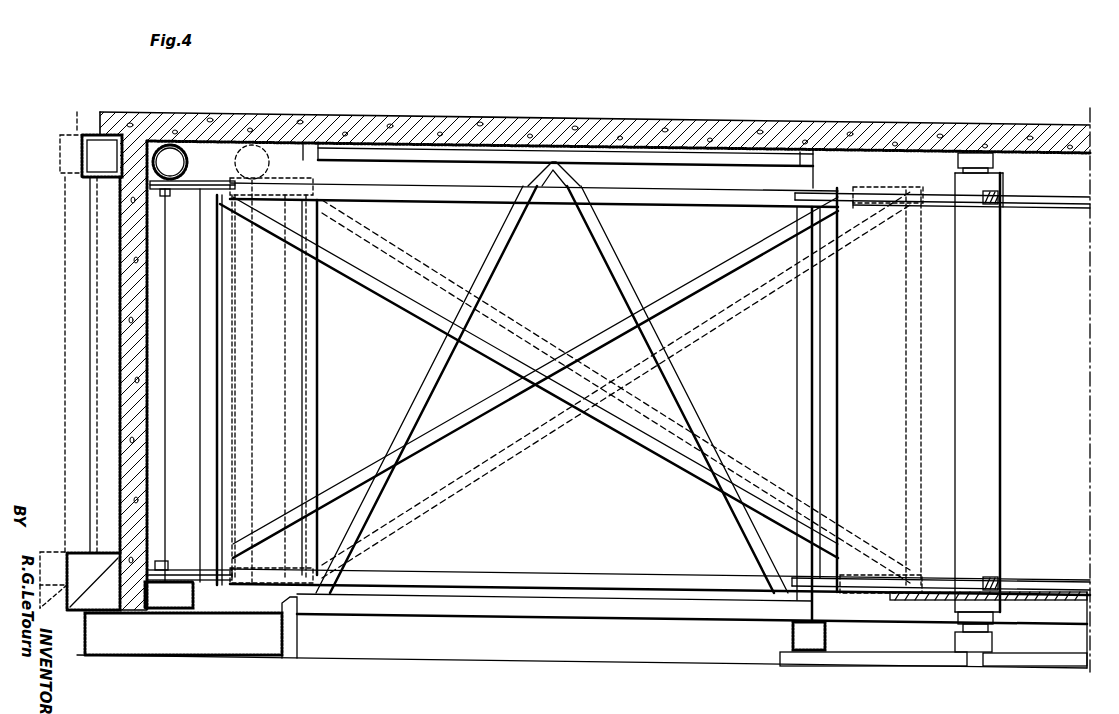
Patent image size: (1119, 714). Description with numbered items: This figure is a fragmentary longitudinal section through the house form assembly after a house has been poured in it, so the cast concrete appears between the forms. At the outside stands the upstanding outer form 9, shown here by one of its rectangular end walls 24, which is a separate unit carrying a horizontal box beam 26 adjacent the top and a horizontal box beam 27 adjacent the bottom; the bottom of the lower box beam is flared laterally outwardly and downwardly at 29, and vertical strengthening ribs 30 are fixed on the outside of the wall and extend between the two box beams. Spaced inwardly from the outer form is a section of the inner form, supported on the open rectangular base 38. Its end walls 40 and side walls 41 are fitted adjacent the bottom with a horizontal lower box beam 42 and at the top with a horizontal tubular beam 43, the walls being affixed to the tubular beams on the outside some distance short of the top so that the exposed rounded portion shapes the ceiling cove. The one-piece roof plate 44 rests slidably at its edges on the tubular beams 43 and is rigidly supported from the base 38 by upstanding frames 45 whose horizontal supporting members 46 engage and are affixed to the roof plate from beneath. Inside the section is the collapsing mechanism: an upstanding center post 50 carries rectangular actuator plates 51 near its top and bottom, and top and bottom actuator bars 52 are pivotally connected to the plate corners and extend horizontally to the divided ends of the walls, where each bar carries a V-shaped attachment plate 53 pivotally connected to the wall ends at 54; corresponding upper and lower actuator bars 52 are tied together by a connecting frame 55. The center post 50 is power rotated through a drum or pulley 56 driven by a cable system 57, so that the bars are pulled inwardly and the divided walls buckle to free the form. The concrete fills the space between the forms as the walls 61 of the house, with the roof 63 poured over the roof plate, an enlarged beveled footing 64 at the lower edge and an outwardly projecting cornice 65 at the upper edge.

The outer form 9 is at (86, 377).
The end walls 24 is at (118, 312).
The horizontal box beam 26 is at (82, 153).
The horizontal box beam 27 is at (86, 546).
The flared bottom 29 is at (113, 570).
The vertical strengthening ribs 30 is at (90, 240).
The rectangular base 38 is at (272, 637).
The end walls 40 is at (147, 384).
The side walls 41 is at (398, 220).
The lower box beam 42 is at (178, 612).
The tubular beam 43 is at (172, 170).
The roof plate 44 is at (640, 140).
The upstanding frames 45 is at (318, 366).
The horizontal supporting members 46 is at (745, 158).
The center post 50 is at (985, 498).
The actuator plates 51 is at (1052, 206).
The actuator bars 52 is at (451, 200).
The V-shaped attachment plate 53 is at (195, 184).
The pivotal connection 54 is at (160, 560).
The connecting frame 55 is at (683, 298).
The drum or pulley 56 is at (912, 602).
The cable system 57 is at (1073, 602).
The walls 61 is at (135, 330).
The roof 63 is at (705, 125).
The beveled footing 64 is at (110, 603).
The cornice 65 is at (108, 118).